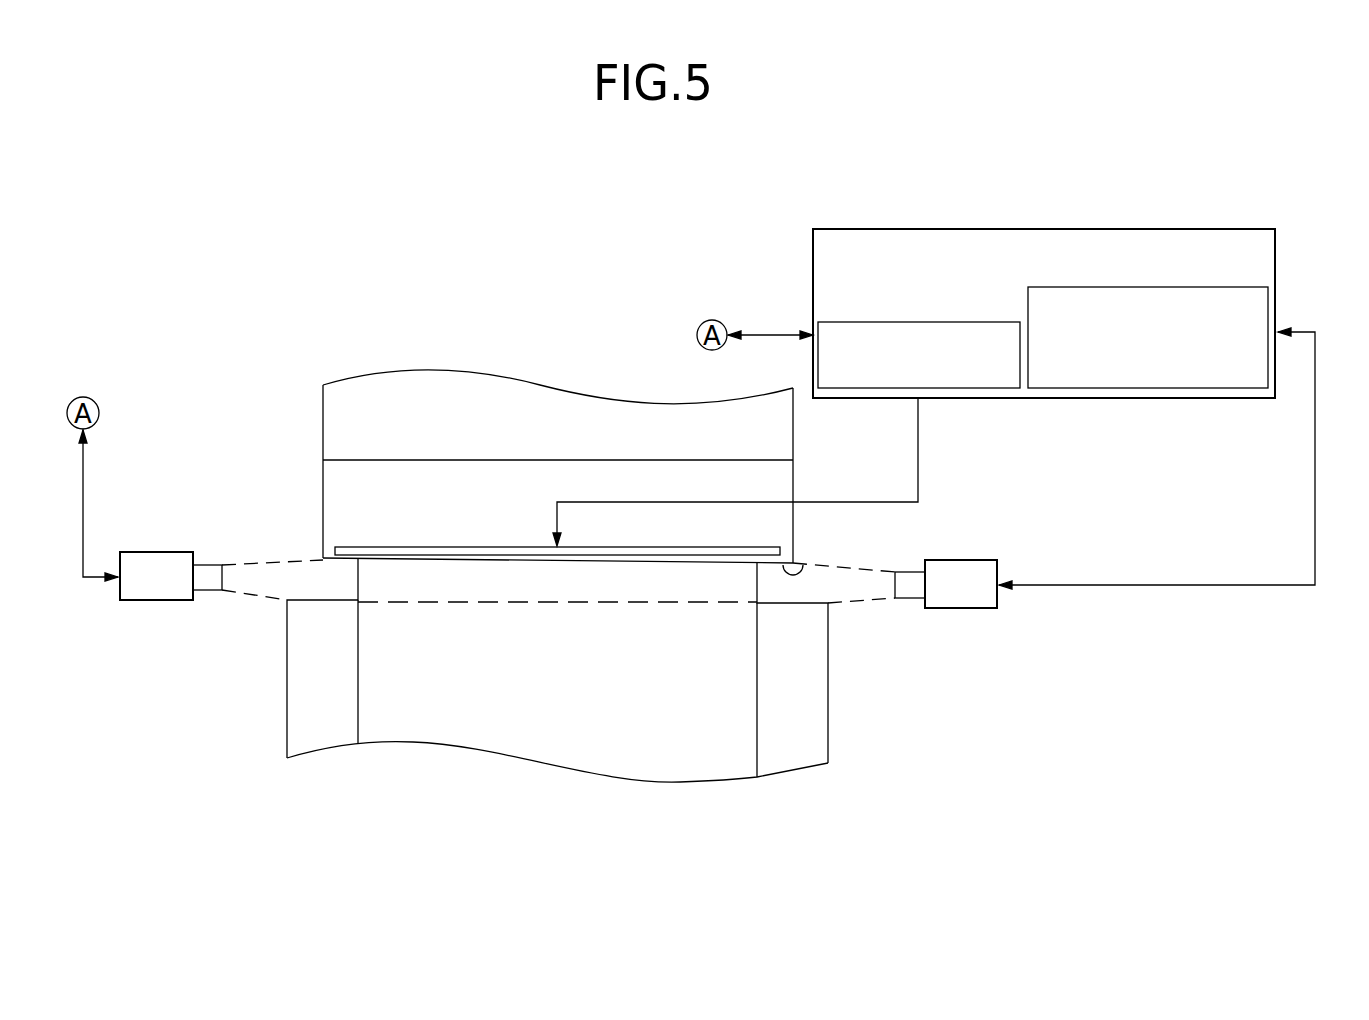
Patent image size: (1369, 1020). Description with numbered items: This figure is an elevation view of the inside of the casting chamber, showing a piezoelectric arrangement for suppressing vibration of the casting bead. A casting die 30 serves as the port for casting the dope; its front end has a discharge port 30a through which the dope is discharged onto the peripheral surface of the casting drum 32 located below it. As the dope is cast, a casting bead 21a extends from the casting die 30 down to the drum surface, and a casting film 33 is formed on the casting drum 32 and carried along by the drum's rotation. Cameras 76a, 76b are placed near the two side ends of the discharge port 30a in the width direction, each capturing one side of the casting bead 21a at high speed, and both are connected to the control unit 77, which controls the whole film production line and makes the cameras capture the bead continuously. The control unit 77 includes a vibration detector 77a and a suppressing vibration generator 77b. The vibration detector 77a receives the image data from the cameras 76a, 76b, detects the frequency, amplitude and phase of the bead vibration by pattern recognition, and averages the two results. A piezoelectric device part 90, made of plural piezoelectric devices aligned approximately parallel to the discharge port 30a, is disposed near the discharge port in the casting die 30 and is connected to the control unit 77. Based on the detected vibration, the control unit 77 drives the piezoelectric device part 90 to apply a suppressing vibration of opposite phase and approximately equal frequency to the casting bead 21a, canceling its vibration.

The control unit 77 is at (847, 229).
The vibration detector 77a is at (858, 389).
The suppressing vibration generator 77b is at (1077, 389).
The casting die 30 is at (323, 442).
The piezoelectric device part 90 is at (480, 552).
The discharge port 30a is at (798, 566).
The casting bead 21a is at (368, 581).
The casting drum 32 is at (830, 713).
The casting film 33 is at (712, 772).
The camera 76a is at (157, 608).
The camera 76b is at (960, 612).